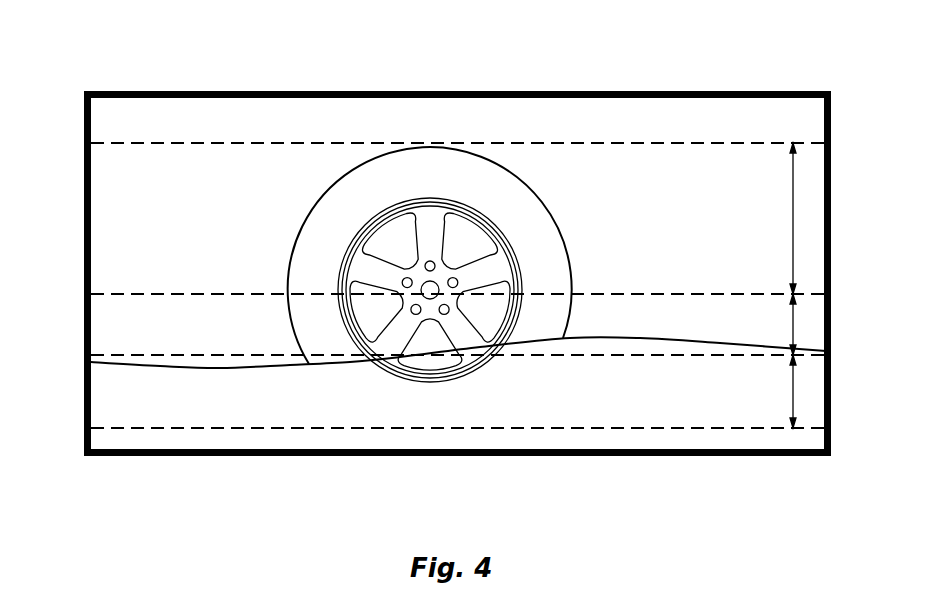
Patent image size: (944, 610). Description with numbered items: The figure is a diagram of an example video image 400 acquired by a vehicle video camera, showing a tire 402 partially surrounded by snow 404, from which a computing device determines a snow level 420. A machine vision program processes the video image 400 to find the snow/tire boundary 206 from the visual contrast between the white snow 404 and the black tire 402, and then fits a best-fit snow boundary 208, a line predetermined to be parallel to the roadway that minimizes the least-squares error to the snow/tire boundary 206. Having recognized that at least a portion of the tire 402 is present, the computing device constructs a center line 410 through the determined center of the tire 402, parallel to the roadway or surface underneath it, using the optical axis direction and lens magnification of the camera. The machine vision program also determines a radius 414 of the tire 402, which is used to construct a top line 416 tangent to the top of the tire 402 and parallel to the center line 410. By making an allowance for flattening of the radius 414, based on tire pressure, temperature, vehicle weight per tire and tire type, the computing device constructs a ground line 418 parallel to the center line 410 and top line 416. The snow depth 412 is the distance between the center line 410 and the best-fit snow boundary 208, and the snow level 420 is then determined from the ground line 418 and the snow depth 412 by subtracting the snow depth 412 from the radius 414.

The video image 400 is at (488, 53).
The tire 402 is at (288, 274).
The snow 404 is at (82, 400).
The snow/tire boundary 206 is at (343, 363).
The best-fit snow boundary 208 is at (197, 353).
The center line 410 is at (727, 291).
The snow depth 412 is at (793, 325).
The radius 414 is at (793, 218).
The top line 416 is at (650, 145).
The ground line 418 is at (648, 430).
The snow level 420 is at (793, 392).